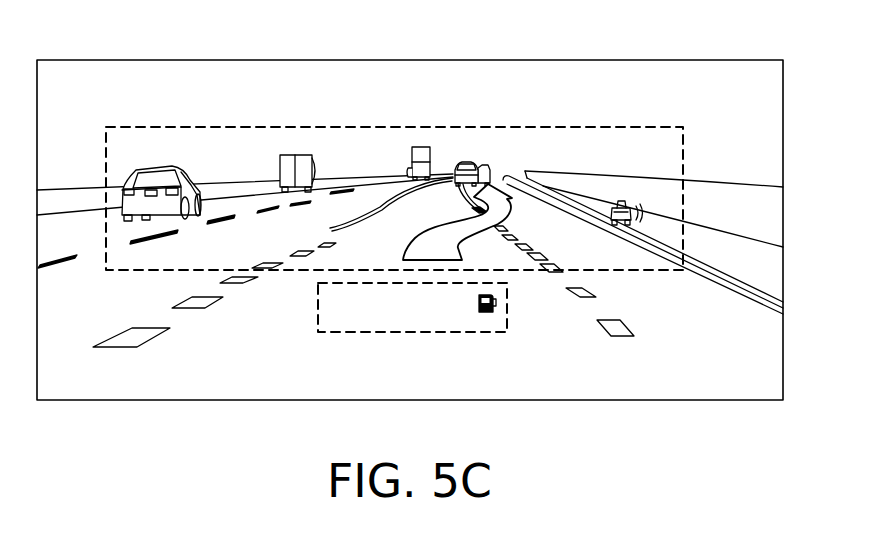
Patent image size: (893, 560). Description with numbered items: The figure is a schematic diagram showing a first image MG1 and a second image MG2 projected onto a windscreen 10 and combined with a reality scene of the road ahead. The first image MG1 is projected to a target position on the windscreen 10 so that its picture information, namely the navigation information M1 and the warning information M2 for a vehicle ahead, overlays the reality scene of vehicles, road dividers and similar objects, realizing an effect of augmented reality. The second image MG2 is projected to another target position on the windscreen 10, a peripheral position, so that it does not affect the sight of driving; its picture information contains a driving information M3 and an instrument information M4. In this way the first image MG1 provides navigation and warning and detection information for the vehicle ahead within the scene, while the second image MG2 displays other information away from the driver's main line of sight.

The windscreen 10 is at (686, 60).
The first image MG1 is at (623, 127).
The second image MG2 is at (477, 333).
The navigation information M1 is at (457, 222).
The warning information for vehicle ahead M2 is at (614, 229).
The driving information M3 is at (396, 326).
The instrument information M4 is at (504, 305).